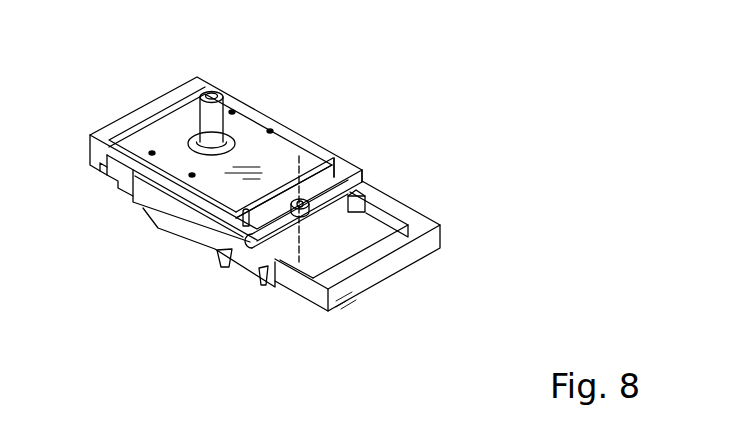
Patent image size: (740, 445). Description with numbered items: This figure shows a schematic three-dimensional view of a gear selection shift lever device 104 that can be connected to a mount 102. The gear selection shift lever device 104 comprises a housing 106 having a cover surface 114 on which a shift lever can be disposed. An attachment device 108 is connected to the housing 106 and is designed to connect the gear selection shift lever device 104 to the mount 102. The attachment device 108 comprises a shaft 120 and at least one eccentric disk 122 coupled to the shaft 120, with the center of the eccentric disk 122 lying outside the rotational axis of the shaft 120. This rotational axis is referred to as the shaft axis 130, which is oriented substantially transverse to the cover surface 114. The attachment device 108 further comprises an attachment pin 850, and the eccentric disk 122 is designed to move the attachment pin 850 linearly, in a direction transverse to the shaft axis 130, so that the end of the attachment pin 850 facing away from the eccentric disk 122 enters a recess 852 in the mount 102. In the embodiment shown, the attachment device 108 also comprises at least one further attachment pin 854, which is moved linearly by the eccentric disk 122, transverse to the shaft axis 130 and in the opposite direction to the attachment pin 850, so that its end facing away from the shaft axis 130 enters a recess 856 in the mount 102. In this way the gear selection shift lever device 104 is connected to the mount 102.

The gear selection shift lever device 104 is at (150, 114).
The housing 106 is at (220, 156).
The cover surface 114 is at (240, 122).
The shaft 120 is at (299, 156).
The shaft axis 130 is at (336, 175).
The attachment device 108 is at (364, 162).
The recess 856 is at (372, 183).
The mount 102 is at (395, 206).
The further attachment pin 854 is at (360, 228).
The recess 852 is at (222, 247).
The attachment pin 850 is at (265, 268).
The eccentric disk 122 is at (308, 205).